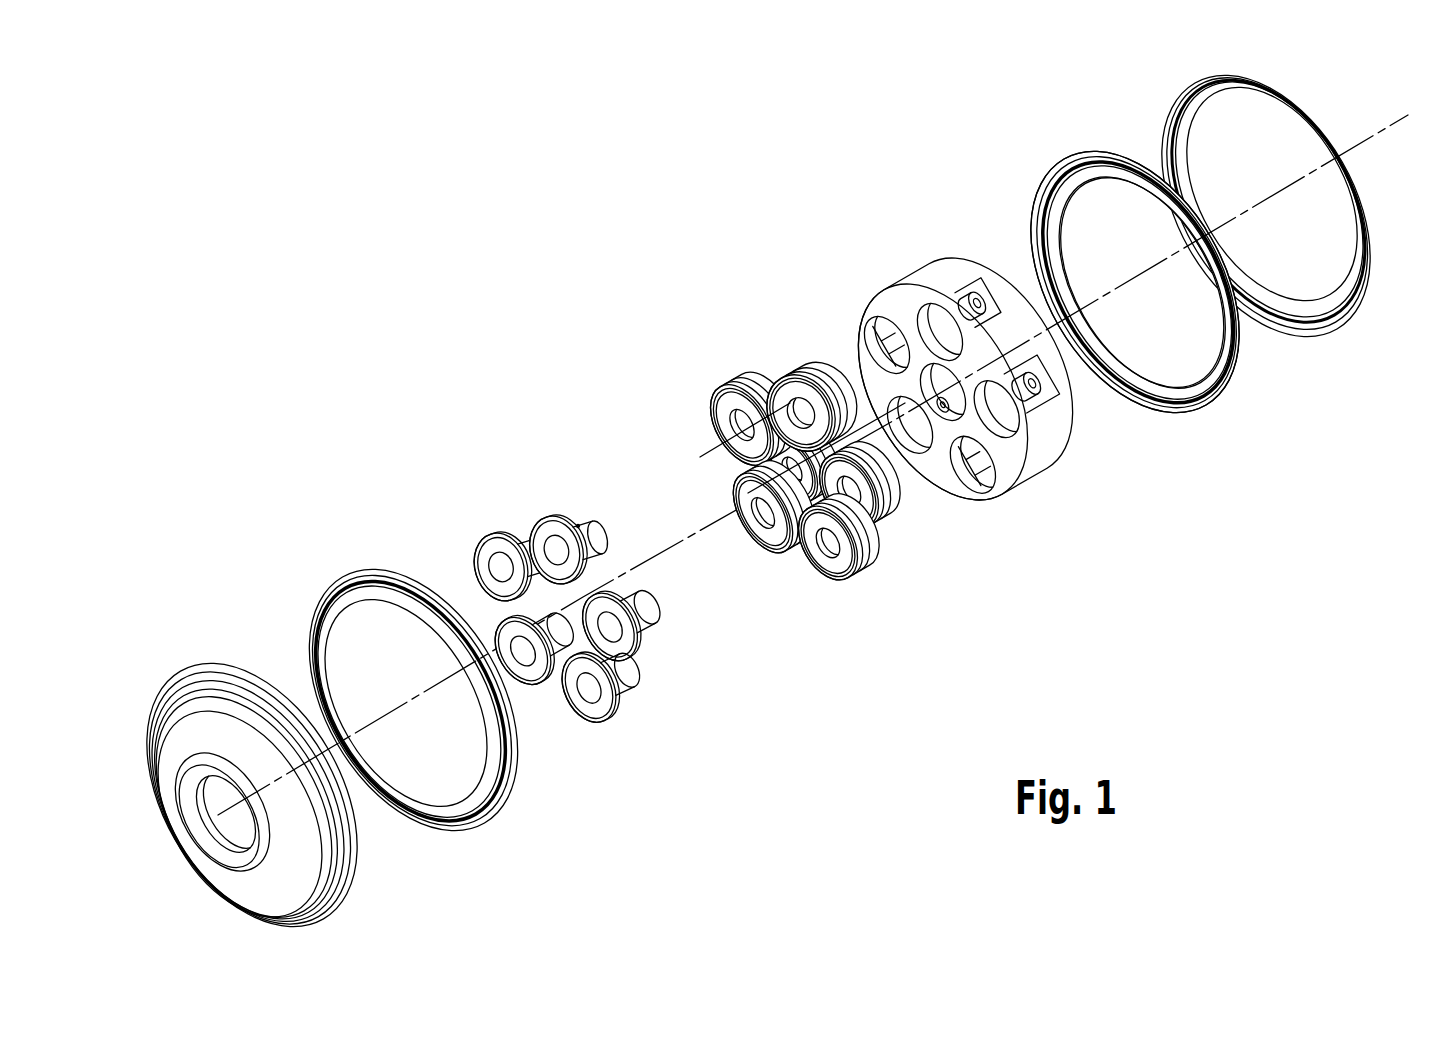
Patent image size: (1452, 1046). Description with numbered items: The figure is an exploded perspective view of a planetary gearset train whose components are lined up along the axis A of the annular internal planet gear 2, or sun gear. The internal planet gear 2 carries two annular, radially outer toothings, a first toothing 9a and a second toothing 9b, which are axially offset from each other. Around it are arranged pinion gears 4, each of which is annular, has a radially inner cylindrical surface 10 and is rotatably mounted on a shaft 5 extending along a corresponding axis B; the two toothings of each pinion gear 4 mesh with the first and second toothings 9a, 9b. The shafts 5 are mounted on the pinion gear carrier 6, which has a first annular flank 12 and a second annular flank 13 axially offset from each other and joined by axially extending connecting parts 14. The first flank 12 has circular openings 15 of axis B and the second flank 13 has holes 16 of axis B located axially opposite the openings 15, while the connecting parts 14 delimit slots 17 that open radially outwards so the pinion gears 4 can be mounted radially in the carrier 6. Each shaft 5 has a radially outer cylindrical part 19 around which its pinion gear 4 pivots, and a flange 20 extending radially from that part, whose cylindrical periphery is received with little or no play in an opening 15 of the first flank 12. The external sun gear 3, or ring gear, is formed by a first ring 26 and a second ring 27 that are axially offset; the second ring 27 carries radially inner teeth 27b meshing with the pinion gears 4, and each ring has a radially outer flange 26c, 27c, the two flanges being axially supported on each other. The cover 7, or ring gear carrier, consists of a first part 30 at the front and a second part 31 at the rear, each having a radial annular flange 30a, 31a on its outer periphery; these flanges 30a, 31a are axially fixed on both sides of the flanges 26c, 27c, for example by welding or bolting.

The internal planet gear 2 is at (773, 460).
The external sun gear 3 is at (1130, 269).
The pinion gear 4 is at (773, 460).
The shaft 5 is at (585, 527).
The pinion gear carrier 6 is at (961, 377).
The cover 7 is at (251, 774).
The first toothing 9a is at (772, 487).
The second toothing 9b is at (853, 453).
The radially inner cylindrical surface 10 is at (745, 436).
The first annular flank 12 is at (925, 488).
The second annular flank 13 is at (1068, 413).
The connecting parts 14 is at (1005, 323).
The circular openings 15 is at (880, 328).
The holes 16 is at (978, 305).
The slots 17 is at (962, 283).
The radially outer cylindrical part 19 is at (647, 610).
The flange 20 is at (649, 620).
The first ring 26 is at (413, 675).
The radially outer flange 26c is at (378, 577).
The second ring 27 is at (1130, 269).
The radially inner teeth 27b is at (1053, 261).
The radially outer flange 27c is at (1078, 160).
The first part 30 is at (251, 774).
The radial annular flange 30a is at (218, 668).
The second part 31 is at (1250, 206).
The radial annular flange 31a is at (1175, 110).
The axis A is at (1360, 146).
The axis B is at (706, 447).